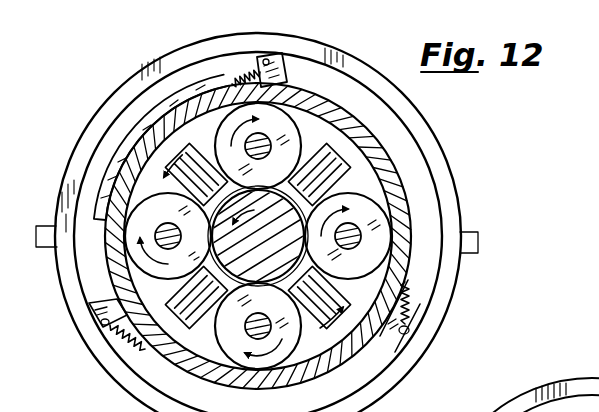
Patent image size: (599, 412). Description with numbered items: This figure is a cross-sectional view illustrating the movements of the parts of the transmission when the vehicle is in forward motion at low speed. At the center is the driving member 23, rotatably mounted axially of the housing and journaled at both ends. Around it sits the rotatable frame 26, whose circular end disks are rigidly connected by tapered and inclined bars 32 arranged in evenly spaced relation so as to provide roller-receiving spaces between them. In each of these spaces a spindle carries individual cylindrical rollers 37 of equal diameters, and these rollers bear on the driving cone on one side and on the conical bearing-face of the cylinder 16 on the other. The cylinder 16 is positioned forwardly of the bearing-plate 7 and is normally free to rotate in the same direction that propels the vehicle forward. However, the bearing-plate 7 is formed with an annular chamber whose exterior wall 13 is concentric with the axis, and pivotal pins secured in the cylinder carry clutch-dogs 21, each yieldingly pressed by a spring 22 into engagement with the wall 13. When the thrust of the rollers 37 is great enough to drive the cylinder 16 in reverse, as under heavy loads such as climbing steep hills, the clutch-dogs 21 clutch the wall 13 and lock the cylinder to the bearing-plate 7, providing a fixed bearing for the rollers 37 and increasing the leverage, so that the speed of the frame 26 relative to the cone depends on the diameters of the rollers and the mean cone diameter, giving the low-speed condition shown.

The bearing-plate 7 is at (451, 290).
The exterior wall 13 is at (381, 106).
The cylinder 16 is at (386, 180).
The clutch-dog 21 is at (288, 75).
The spring 22 is at (234, 82).
The driving member 23 is at (297, 248).
The rotatable frame 26 is at (190, 150).
The inclined bars 32 is at (168, 236).
The cylindrical rollers 37 is at (228, 121).